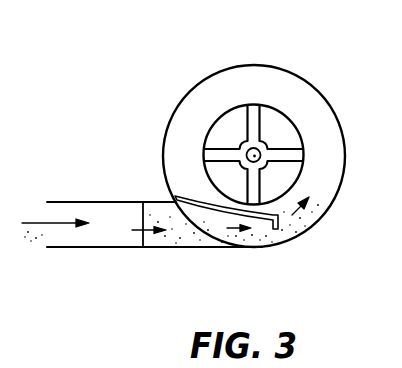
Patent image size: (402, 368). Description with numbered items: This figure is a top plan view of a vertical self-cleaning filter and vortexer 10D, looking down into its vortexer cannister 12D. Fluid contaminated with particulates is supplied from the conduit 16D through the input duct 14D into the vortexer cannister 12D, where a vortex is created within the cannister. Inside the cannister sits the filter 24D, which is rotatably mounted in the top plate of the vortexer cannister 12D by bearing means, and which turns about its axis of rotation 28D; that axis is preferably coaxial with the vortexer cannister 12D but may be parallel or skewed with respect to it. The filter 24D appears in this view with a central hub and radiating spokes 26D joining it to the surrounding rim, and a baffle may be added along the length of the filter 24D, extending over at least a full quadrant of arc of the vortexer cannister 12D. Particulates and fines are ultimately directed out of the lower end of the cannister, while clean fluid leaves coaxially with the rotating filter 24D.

The vertical self-cleaning filter and vortexer 10D is at (298, 38).
The vortexer cannister 12D is at (203, 81).
The input duct 14D is at (188, 233).
The conduit 16D is at (112, 248).
The filter 24D is at (301, 173).
The spokes 26D is at (261, 183).
The axis of rotation 28D is at (259, 150).